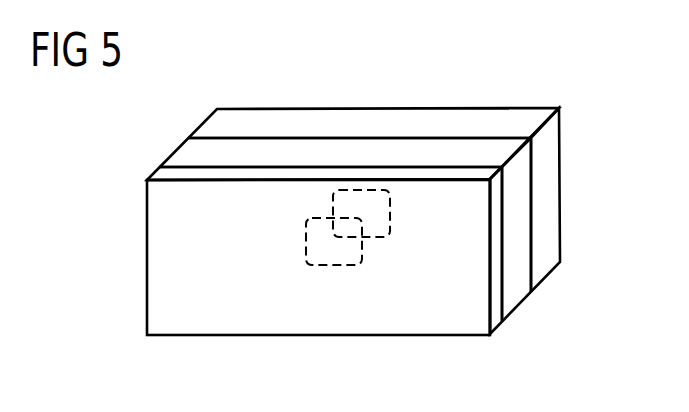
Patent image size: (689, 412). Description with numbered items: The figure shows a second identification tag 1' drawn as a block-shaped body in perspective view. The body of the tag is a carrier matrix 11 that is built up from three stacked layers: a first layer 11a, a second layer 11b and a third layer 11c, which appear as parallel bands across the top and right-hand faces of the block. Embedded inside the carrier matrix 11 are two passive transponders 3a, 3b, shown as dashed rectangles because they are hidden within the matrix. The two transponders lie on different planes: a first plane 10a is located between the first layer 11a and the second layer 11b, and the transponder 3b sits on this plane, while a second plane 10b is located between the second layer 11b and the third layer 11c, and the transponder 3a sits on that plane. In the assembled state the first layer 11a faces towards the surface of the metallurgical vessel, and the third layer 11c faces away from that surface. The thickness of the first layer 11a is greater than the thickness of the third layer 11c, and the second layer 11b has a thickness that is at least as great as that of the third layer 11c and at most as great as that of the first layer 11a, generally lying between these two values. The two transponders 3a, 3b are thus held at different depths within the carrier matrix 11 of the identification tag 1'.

The second identification tag 1' is at (303, 59).
The carrier matrix 11 is at (480, 108).
The first layer 11a is at (550, 139).
The first plane 10a is at (532, 180).
The second layer 11b is at (517, 232).
The second plane 10b is at (505, 277).
The third layer 11c is at (495, 303).
The passive transponder 3a is at (333, 253).
The passive transponder 3b is at (378, 222).